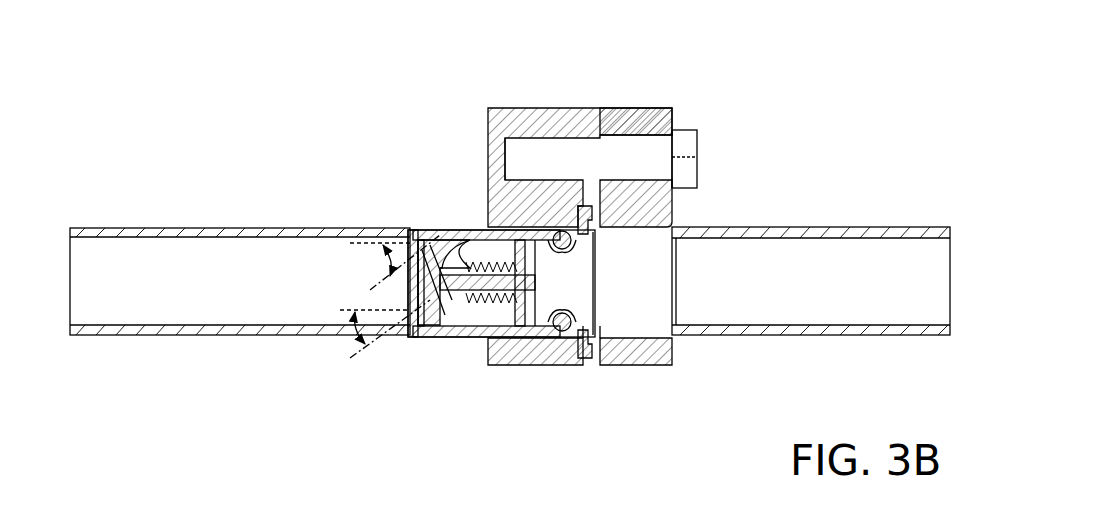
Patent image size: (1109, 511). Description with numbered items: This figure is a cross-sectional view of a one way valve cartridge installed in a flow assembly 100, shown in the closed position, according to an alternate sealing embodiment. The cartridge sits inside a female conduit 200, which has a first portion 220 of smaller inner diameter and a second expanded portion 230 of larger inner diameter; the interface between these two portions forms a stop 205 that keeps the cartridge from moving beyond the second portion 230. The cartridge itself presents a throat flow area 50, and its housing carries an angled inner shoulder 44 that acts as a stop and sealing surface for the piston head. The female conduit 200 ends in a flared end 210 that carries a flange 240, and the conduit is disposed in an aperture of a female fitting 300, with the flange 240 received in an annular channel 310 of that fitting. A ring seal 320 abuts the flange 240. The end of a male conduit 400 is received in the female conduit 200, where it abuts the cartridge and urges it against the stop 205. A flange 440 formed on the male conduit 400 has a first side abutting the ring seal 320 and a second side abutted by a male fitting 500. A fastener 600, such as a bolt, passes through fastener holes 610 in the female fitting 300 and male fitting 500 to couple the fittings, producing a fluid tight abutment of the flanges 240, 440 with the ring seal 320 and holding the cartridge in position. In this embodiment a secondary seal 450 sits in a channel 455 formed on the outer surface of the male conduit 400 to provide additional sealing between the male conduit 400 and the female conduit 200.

The flow assembly 100 is at (903, 96).
The female conduit 200 is at (188, 339).
The stop 205 is at (428, 237).
The flared end 210 is at (584, 214).
The first portion 220 is at (72, 90).
The second expanded portion 230 is at (570, 90).
The flange 240 is at (578, 366).
The female fitting 300 is at (573, 113).
The annular channel 310 is at (584, 212).
The ring seal 320 is at (597, 366).
The male conduit 400 is at (795, 339).
The flange 440 is at (596, 204).
The secondary seal 450 is at (556, 343).
The channel 455 is at (542, 346).
The male fitting 500 is at (640, 368).
The fastener 600 is at (698, 140).
The fastener holes 610 is at (642, 138).
The inner shoulder 44 is at (473, 340).
The throat flow area 50 is at (457, 238).